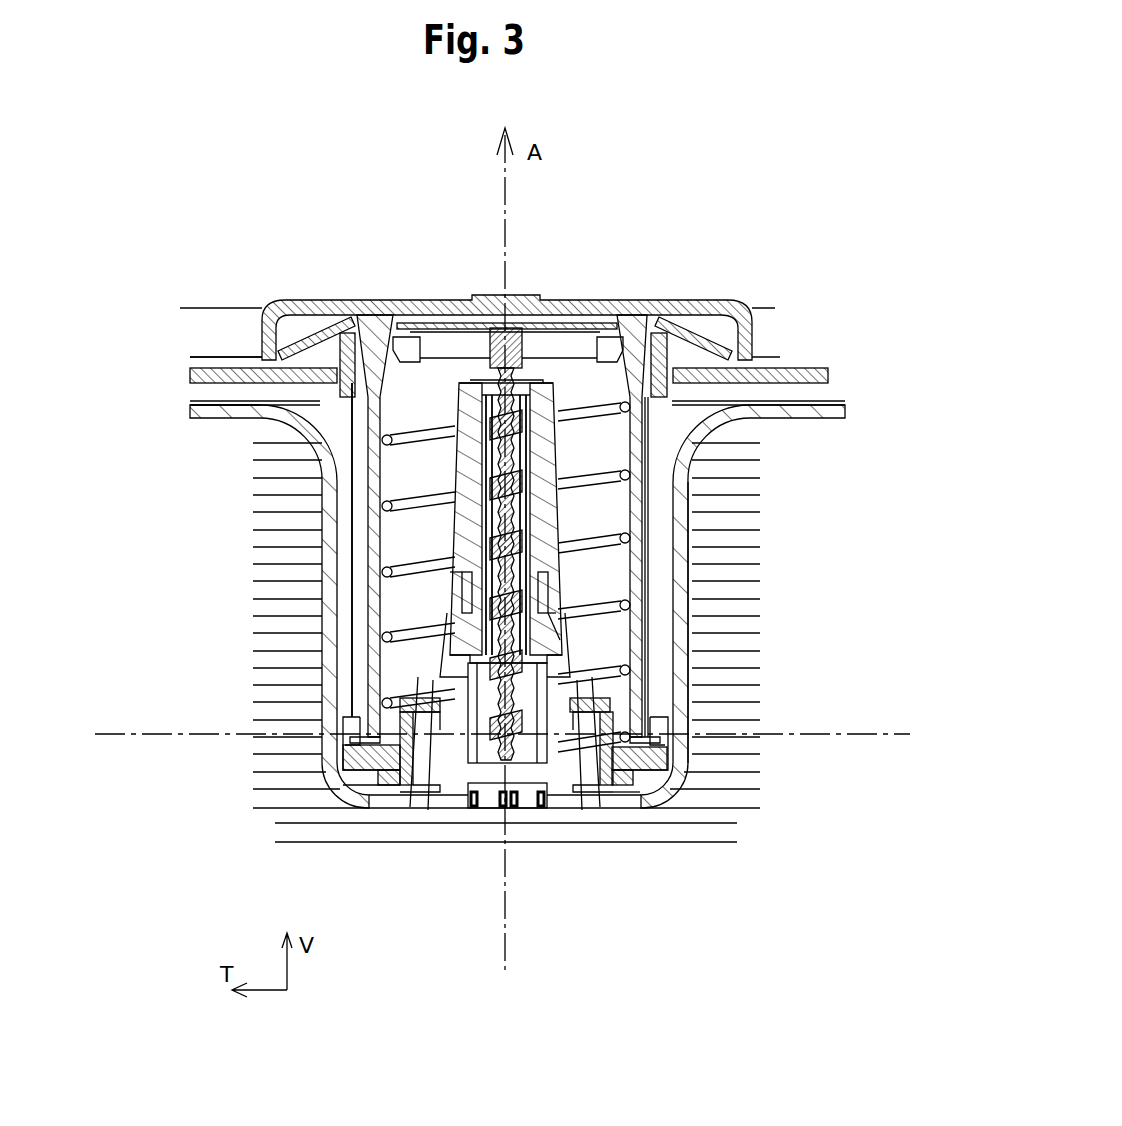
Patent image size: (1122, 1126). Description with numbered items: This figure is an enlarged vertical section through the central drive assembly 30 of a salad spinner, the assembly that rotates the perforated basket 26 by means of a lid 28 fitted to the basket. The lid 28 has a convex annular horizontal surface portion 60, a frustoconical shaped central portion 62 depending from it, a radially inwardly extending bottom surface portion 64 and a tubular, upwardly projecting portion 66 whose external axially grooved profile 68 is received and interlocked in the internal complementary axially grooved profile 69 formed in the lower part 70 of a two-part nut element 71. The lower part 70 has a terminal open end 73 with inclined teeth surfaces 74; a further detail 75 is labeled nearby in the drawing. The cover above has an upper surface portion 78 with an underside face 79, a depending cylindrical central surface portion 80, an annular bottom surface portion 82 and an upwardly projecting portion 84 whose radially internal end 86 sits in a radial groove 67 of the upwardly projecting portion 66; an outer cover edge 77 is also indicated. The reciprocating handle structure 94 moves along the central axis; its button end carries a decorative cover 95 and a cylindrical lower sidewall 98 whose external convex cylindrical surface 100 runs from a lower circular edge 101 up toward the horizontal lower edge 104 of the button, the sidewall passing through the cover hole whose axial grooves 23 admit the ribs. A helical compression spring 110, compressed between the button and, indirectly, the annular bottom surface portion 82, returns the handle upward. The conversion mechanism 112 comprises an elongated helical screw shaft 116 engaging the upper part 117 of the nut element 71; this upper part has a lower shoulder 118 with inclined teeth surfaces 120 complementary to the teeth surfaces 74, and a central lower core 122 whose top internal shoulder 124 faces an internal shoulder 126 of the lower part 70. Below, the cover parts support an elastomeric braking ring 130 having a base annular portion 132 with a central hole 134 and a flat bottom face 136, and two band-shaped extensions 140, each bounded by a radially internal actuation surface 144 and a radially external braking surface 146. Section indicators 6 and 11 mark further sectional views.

The section line 6- 6 is at (342, 393).
The section line 11- 11 is at (100, 700).
The axial groove 23 is at (661, 340).
The perforated basket 26 is at (778, 316).
The lid 28 is at (870, 404).
The drive assembly 30 is at (410, 470).
The convex annular horizontal surface portion 60 is at (213, 412).
The frustoconical shaped central portion 62 is at (380, 620).
The bottom surface portion 64 is at (433, 715).
The upwardly projecting portion 66 is at (455, 770).
The radial groove 67 is at (612, 702).
The external axially grooved profile 68 is at (441, 760).
The internal complementary axially grooved profile 69 is at (520, 812).
The lower part 70 is at (440, 650).
The nut element 71 is at (578, 581).
The terminal open end 73 is at (478, 560).
The inclined teeth surfaces 74 is at (468, 572).
The threaded spindle 75 is at (492, 790).
The cover edge 77 is at (232, 368).
The upper surface portion 78 is at (195, 372).
The underside face 79 is at (230, 393).
The central surface portion 80 is at (682, 469).
The annular bottom surface portion 82 is at (630, 790).
The upwardly projecting portion 84 is at (582, 775).
The radially internal end 86 is at (400, 790).
The reciprocating handle structure 94 is at (708, 318).
The decorative cover 95 is at (605, 322).
The cylindrical lower sidewall 98 is at (345, 523).
The external convex cylindrical surface 100 is at (368, 567).
The lower circular edge 101 is at (373, 808).
The horizontal lower edge 104 is at (760, 380).
The helical compression spring 110 is at (602, 410).
The conversion mechanism 112 is at (536, 452).
The elongated helical screw shaft 116 is at (487, 422).
The upper part 117 is at (640, 537).
The lower shoulder 118 is at (640, 597).
The inclined teeth surfaces 120 is at (388, 595).
The central lower core 122 is at (545, 640).
The top internal shoulder 124 is at (556, 620).
The internal shoulder 126 is at (355, 700).
The braking ring 130 is at (660, 815).
The base annular portion 132 is at (645, 778).
The central hole 134 is at (345, 798).
The flat bottom face 136 is at (615, 782).
The extension 140 is at (345, 745).
The radially internal actuation surface 144 is at (655, 710).
The radially external braking surface 146 is at (665, 740).